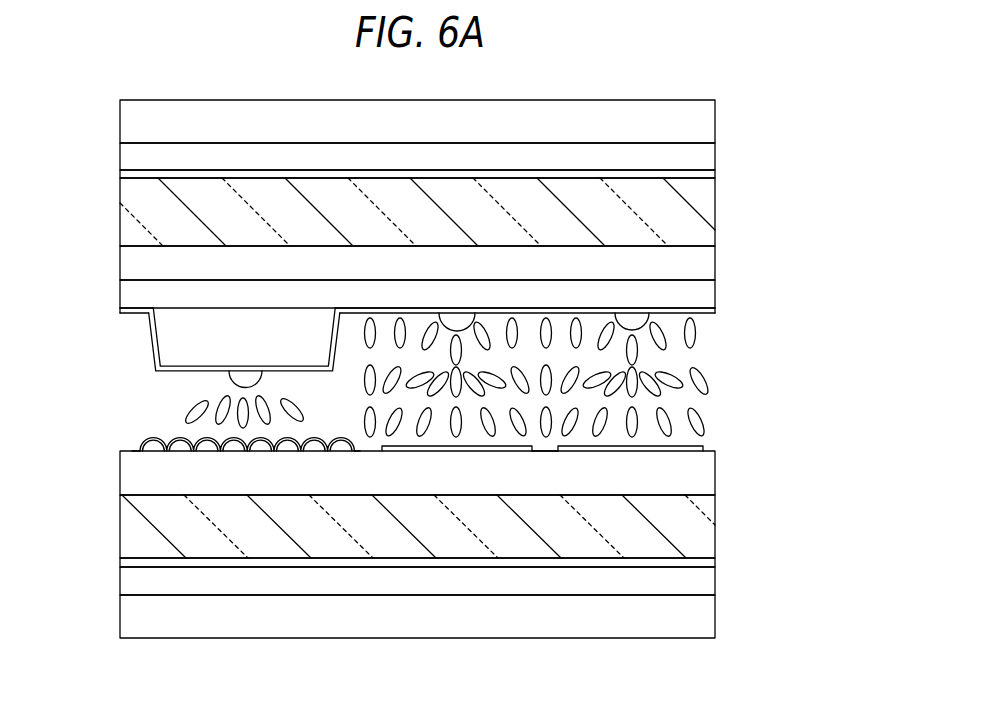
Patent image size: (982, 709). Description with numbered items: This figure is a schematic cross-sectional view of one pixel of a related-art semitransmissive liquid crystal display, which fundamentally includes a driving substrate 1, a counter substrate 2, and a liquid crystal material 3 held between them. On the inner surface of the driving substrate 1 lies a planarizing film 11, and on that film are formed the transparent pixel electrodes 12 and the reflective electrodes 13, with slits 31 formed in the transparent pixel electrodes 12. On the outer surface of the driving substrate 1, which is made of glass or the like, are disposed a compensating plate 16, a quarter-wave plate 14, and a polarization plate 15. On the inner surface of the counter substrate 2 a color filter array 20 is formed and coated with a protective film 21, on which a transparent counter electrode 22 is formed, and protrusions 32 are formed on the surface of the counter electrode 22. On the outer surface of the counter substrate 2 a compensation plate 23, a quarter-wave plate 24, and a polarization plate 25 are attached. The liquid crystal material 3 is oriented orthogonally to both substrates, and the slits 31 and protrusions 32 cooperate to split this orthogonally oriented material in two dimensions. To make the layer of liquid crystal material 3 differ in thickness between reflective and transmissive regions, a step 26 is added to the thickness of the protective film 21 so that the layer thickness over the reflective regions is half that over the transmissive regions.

The driving substrate 1 is at (698, 518).
The counter substrate 2 is at (705, 220).
The liquid crystal material 3 is at (700, 360).
The planarizing film 11 is at (698, 473).
The transparent pixel electrodes 12 is at (703, 447).
The reflective electrodes 13 is at (153, 442).
The λ/4 plate 14 is at (702, 582).
The polarization plate 15 is at (698, 618).
The compensating plate 16 is at (713, 565).
The color filter array 20 is at (702, 260).
The protective film 21 is at (128, 293).
The transparent counter electrode 22 is at (373, 328).
The compensation plate 23 is at (705, 181).
The λ/4 plate 24 is at (705, 157).
The polarization plate 25 is at (702, 122).
The step 26 is at (183, 333).
The slits 31 is at (548, 450).
The protrusions 32 is at (642, 318).